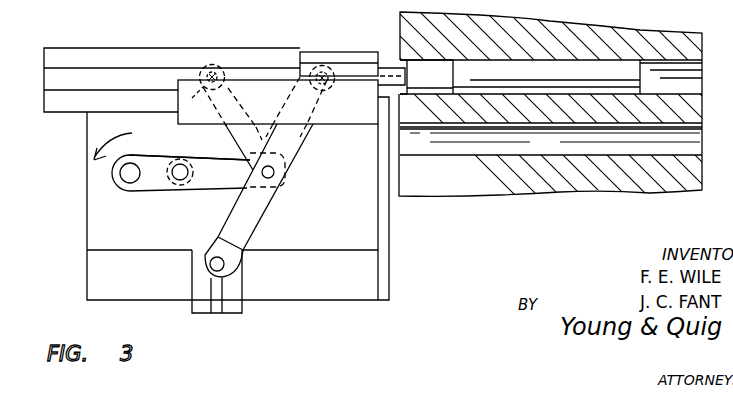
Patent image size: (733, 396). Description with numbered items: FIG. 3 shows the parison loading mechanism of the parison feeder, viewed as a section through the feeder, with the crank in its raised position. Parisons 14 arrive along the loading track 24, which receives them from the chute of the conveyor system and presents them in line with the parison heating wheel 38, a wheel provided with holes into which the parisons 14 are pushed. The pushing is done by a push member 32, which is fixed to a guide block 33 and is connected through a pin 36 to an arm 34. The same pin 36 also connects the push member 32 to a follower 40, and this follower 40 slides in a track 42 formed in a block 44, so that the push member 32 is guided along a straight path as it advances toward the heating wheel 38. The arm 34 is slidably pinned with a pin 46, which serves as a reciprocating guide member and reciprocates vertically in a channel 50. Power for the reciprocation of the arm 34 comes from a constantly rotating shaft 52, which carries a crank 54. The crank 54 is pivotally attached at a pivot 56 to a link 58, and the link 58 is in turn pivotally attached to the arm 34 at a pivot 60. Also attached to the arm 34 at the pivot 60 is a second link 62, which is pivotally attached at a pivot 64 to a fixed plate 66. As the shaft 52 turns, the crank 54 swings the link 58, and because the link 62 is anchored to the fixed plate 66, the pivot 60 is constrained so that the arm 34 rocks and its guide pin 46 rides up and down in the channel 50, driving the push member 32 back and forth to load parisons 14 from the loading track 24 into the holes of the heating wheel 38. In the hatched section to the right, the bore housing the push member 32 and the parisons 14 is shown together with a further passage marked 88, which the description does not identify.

The parisons 14 is at (558, 83).
The loading track 24 is at (281, 104).
The push member 32 is at (443, 83).
The guide block 33 is at (356, 50).
The arm 34 is at (258, 221).
The pin 36 is at (321, 52).
The parison heating wheel 38 is at (463, 193).
The follower 40 is at (328, 88).
The track 42 is at (84, 72).
The block 44 is at (152, 48).
The pin 46 is at (208, 266).
The channel 50 is at (218, 308).
The constantly rotating shaft 52 is at (131, 191).
The crank 54 is at (152, 190).
The pivot 56 is at (181, 164).
The link 58 is at (235, 180).
The pivot 60 is at (277, 177).
The link 62 is at (261, 148).
The pivot 64 is at (203, 94).
The fixed plate 66 is at (340, 233).
The passage 88 is at (555, 148).